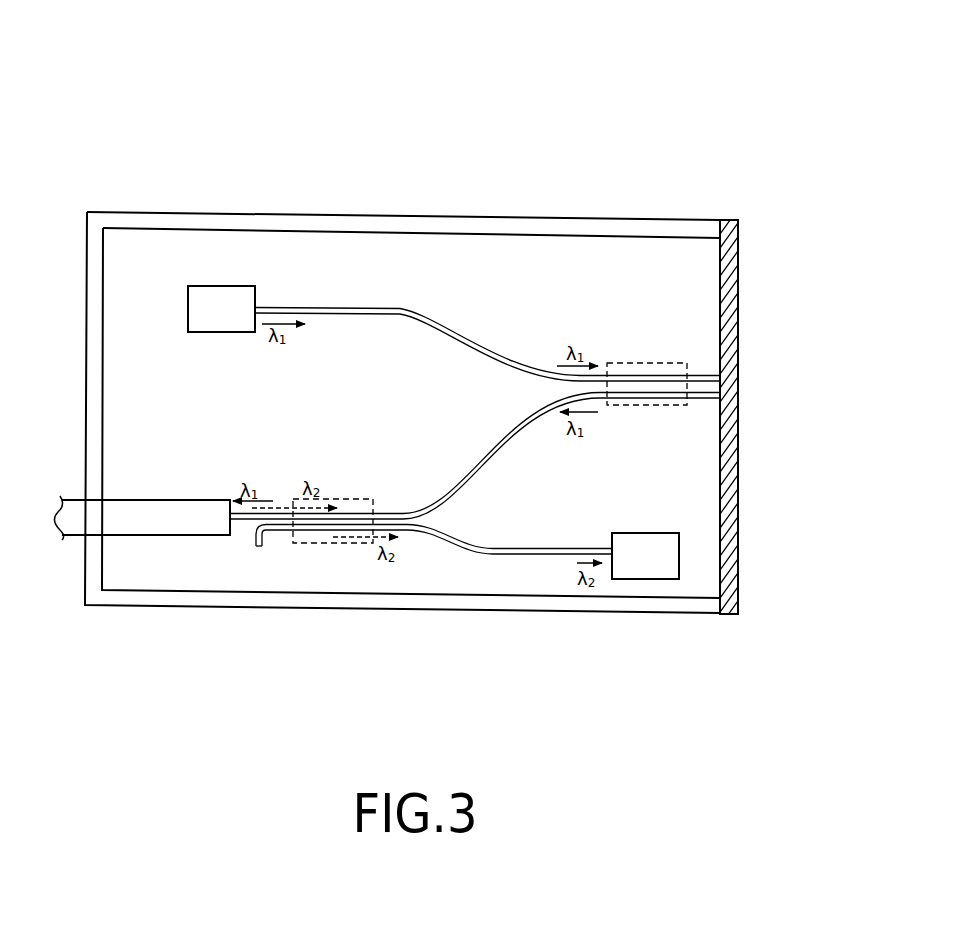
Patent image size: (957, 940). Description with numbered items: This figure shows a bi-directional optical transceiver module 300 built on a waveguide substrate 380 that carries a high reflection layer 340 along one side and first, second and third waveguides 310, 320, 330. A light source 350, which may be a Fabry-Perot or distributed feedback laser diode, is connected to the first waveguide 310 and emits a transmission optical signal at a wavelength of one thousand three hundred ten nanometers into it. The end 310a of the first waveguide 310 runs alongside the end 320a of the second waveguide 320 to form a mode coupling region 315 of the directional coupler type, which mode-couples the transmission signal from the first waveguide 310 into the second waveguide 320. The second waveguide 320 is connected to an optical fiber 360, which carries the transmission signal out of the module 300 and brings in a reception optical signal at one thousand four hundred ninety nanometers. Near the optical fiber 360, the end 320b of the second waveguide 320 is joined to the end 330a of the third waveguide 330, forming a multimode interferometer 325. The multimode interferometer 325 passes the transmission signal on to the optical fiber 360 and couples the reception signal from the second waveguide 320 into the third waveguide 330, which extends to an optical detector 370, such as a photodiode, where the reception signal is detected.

The bi-directional optical transceiver module 300 is at (581, 47).
The waveguide substrate 380 is at (113, 222).
The light source 350 is at (220, 300).
The first waveguide 310 is at (373, 307).
The end of first waveguide 310a is at (648, 363).
The mode coupling region 315 is at (670, 363).
The high reflection layer 340 is at (733, 267).
The second waveguide 320 is at (483, 445).
The end of second waveguide 320a is at (658, 408).
The end of second waveguide 320b is at (355, 499).
The multimode interferometer 325 is at (333, 545).
The third waveguide 330 is at (494, 555).
The end of third waveguide 330a is at (283, 530).
The optical fiber 360 is at (79, 520).
The optical detector 370 is at (652, 570).